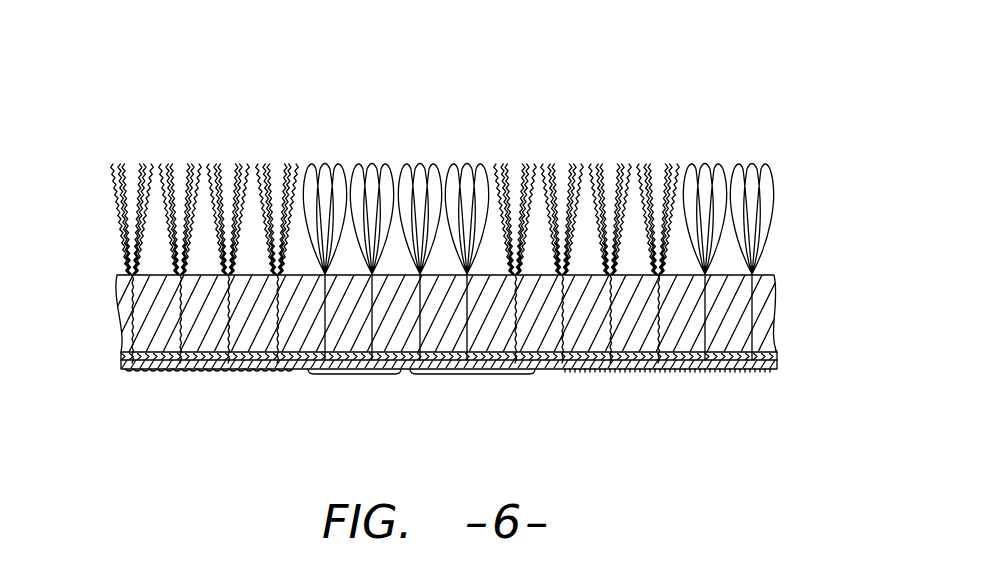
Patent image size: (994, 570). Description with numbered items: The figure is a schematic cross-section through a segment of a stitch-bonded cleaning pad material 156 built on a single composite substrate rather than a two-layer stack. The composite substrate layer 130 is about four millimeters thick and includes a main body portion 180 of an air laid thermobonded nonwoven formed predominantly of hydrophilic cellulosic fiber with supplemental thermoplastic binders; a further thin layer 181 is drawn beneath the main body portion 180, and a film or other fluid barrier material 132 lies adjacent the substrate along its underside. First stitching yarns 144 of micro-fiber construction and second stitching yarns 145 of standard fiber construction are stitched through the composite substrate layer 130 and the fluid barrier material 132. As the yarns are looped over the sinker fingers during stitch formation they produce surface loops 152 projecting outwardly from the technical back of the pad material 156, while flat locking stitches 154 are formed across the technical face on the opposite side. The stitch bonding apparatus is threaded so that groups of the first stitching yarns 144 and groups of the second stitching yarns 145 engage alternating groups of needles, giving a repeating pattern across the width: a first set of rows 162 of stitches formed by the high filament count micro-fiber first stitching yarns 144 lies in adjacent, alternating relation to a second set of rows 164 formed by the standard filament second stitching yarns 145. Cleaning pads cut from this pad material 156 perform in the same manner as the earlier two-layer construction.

The pad material 156 is at (745, 97).
The composite substrate layer 130 is at (108, 274).
The main body portion 180 is at (775, 287).
The intermediate adhesive layer 181 is at (774, 342).
The film or other fluid barrier material 132 is at (777, 367).
The flat locking stitches 154 is at (405, 382).
The surface loops 152 is at (108, 197).
The first set of rows 162 is at (303, 137).
The second set of rows 164 is at (492, 137).
The first stitching yarns 144 is at (118, 231).
The second stitching yarns 145 is at (775, 221).